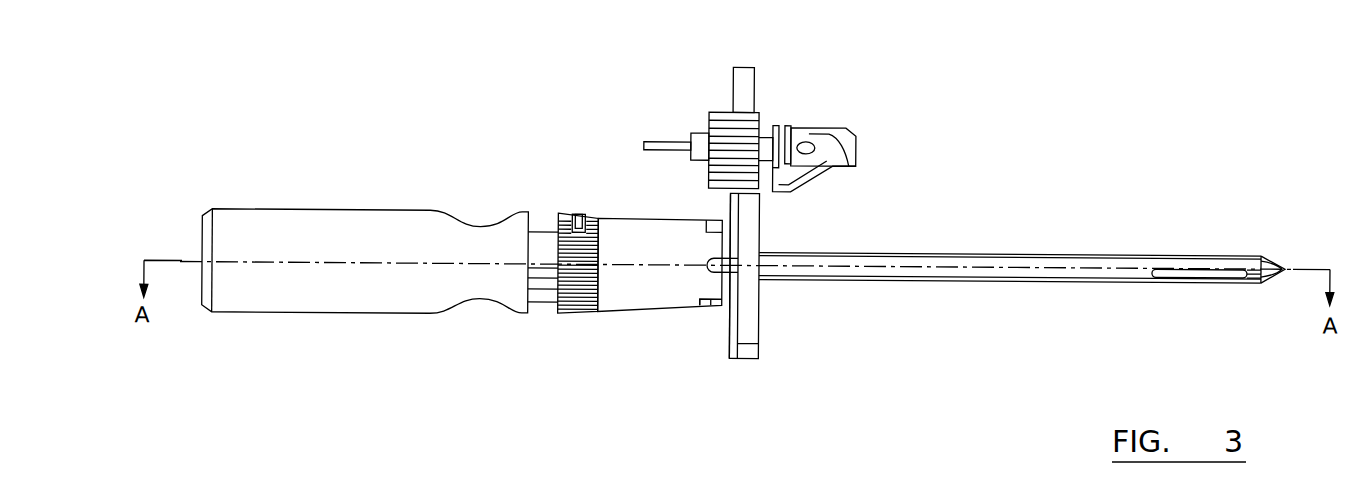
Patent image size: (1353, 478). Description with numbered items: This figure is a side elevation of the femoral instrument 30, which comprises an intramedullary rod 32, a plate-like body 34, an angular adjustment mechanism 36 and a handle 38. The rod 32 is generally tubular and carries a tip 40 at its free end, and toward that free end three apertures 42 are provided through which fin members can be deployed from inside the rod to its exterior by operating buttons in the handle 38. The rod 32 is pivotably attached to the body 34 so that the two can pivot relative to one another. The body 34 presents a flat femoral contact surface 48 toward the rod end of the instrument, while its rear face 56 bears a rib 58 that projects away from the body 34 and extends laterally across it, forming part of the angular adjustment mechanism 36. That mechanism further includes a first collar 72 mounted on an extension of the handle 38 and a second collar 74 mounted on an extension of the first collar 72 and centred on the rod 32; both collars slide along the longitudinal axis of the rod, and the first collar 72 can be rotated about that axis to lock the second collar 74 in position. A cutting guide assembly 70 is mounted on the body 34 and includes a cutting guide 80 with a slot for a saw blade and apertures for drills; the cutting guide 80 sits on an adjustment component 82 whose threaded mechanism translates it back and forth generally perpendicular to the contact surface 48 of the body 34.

The instrument 30 is at (1093, 172).
The intramedullary rod 32 is at (1033, 251).
The body 34 is at (745, 360).
The angular adjustment mechanism 36 is at (715, 315).
The handle 38 is at (312, 318).
The tip 40 is at (1279, 261).
The apertures 42 is at (1200, 276).
The femoral contact surface 48 is at (763, 310).
The rear face 56 is at (737, 213).
The rib 58 is at (752, 256).
The cutting guide assembly 70 is at (803, 108).
The first collar 72 is at (578, 216).
The second collar 74 is at (622, 313).
The cutting guide 80 is at (858, 132).
The adjustment component 82 is at (717, 110).